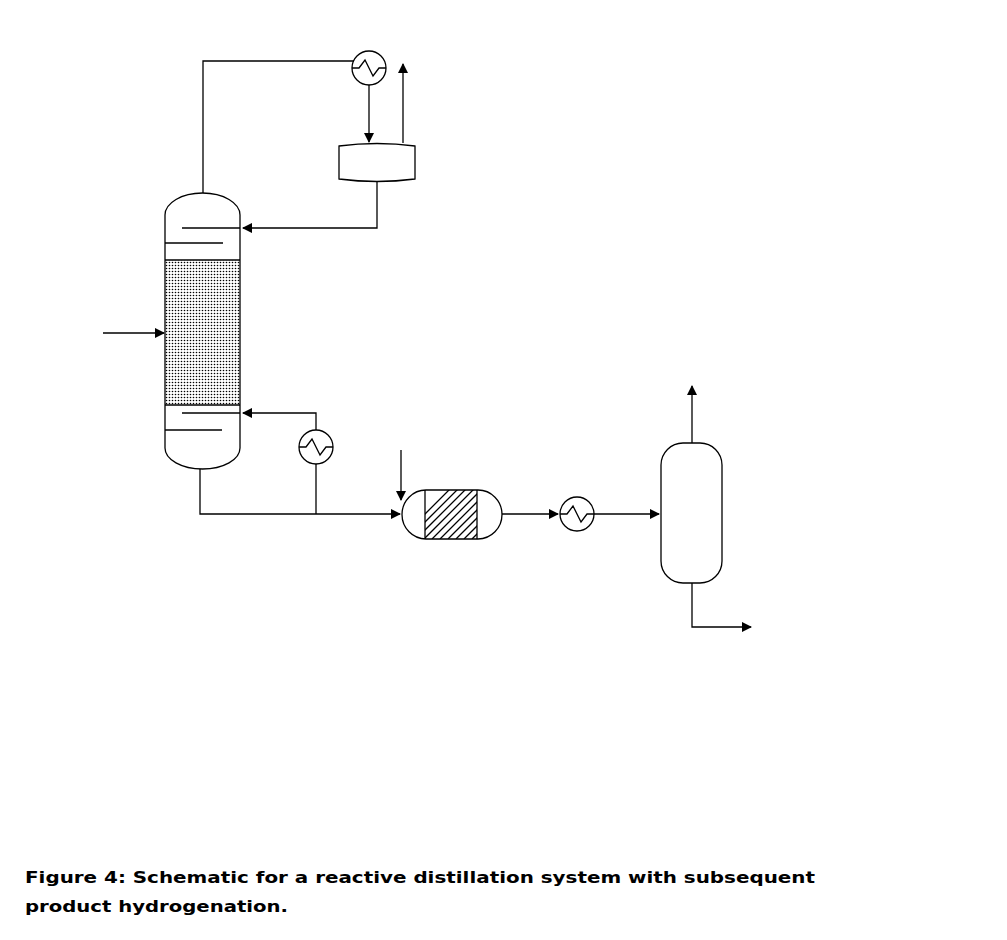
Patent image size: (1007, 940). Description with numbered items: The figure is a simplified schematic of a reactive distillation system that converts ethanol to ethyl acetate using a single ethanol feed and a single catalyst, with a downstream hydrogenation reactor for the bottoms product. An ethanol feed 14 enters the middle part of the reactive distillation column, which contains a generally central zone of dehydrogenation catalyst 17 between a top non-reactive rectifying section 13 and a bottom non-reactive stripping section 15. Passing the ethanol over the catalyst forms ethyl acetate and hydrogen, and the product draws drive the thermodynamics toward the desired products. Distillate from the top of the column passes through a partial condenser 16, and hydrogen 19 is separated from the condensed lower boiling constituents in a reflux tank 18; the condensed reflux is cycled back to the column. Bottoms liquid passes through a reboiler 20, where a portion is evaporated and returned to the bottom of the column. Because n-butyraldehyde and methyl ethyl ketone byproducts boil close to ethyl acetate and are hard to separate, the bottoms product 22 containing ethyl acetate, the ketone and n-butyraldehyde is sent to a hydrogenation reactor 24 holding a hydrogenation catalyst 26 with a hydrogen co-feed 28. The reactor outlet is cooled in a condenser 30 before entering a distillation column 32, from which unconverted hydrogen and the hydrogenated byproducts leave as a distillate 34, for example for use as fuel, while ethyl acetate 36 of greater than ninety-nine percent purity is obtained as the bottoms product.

The non-reactive rectifying section 13 is at (181, 218).
The ethanol feed 14 is at (96, 331).
The non-reactive stripping section 15 is at (180, 423).
The partial condenser 16 is at (366, 52).
The dehydrogenation catalyst 17 is at (212, 300).
The reflux tank 18 is at (416, 163).
The hydrogen 19 is at (439, 87).
The reboiler 20 is at (329, 433).
The bottoms product 22 is at (305, 537).
The hydrogenation reactor 24 is at (448, 490).
The hydrogenation catalyst 26 is at (470, 540).
The hydrogen co-feed 28 is at (422, 458).
The condenser 30 is at (580, 497).
The distillation column 32 is at (722, 503).
The distillate 34 is at (700, 371).
The ethyl acetate 36 is at (784, 615).